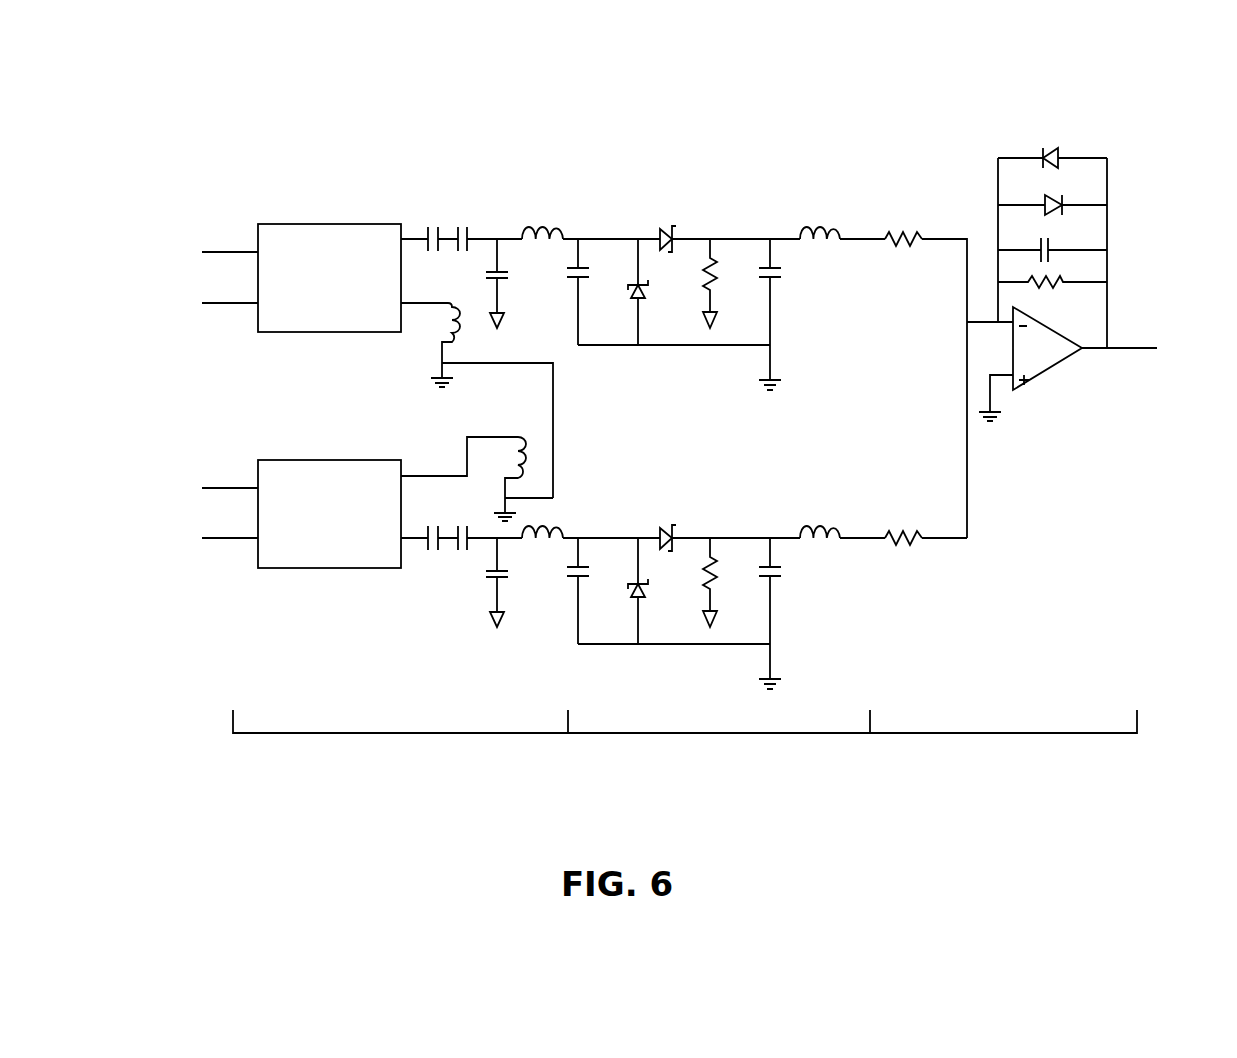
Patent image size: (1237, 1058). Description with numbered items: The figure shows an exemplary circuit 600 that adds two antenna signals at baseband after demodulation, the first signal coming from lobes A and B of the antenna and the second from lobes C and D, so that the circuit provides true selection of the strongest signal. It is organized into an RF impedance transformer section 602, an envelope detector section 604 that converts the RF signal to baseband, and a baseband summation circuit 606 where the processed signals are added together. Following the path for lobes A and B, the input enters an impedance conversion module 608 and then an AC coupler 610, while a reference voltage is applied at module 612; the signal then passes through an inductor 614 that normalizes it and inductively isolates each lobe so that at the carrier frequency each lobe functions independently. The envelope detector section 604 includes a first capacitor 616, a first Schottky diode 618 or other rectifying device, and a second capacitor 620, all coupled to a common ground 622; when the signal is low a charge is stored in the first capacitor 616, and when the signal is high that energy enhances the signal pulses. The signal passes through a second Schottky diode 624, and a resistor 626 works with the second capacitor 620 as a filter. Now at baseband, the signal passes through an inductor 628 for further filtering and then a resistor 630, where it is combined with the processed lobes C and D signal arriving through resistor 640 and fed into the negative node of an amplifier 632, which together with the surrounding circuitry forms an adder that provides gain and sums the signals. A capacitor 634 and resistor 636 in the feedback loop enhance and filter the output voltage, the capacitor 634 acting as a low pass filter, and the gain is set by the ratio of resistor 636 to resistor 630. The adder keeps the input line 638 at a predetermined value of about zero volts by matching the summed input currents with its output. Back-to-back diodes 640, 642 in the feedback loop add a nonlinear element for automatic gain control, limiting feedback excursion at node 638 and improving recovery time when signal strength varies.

The circuit 600 is at (365, 136).
The RF impedance transformer section 602 is at (400, 767).
The envelope detector section 604 is at (719, 760).
The baseband summation circuit 606 is at (1003, 760).
The impedance conversion module 608 is at (310, 224).
The AC coupler 610 is at (443, 222).
The module 612 is at (507, 320).
The inductor 614 is at (535, 226).
The first capacitor 616 is at (585, 282).
The first Schottky diode 618 is at (648, 287).
The second capacitor 620 is at (780, 282).
The common ground 622 is at (775, 370).
The second Schottky diode 624 is at (660, 240).
The resistor 626 is at (720, 282).
The inductor 628 is at (815, 226).
The resistor 630 is at (900, 233).
The amplifier 632 is at (1052, 367).
The capacitor 634 is at (1040, 243).
The resistor 636 is at (1063, 285).
The input line 638 is at (975, 324).
The resistor / diode 640 is at (900, 531).
The diode 642 is at (1062, 200).